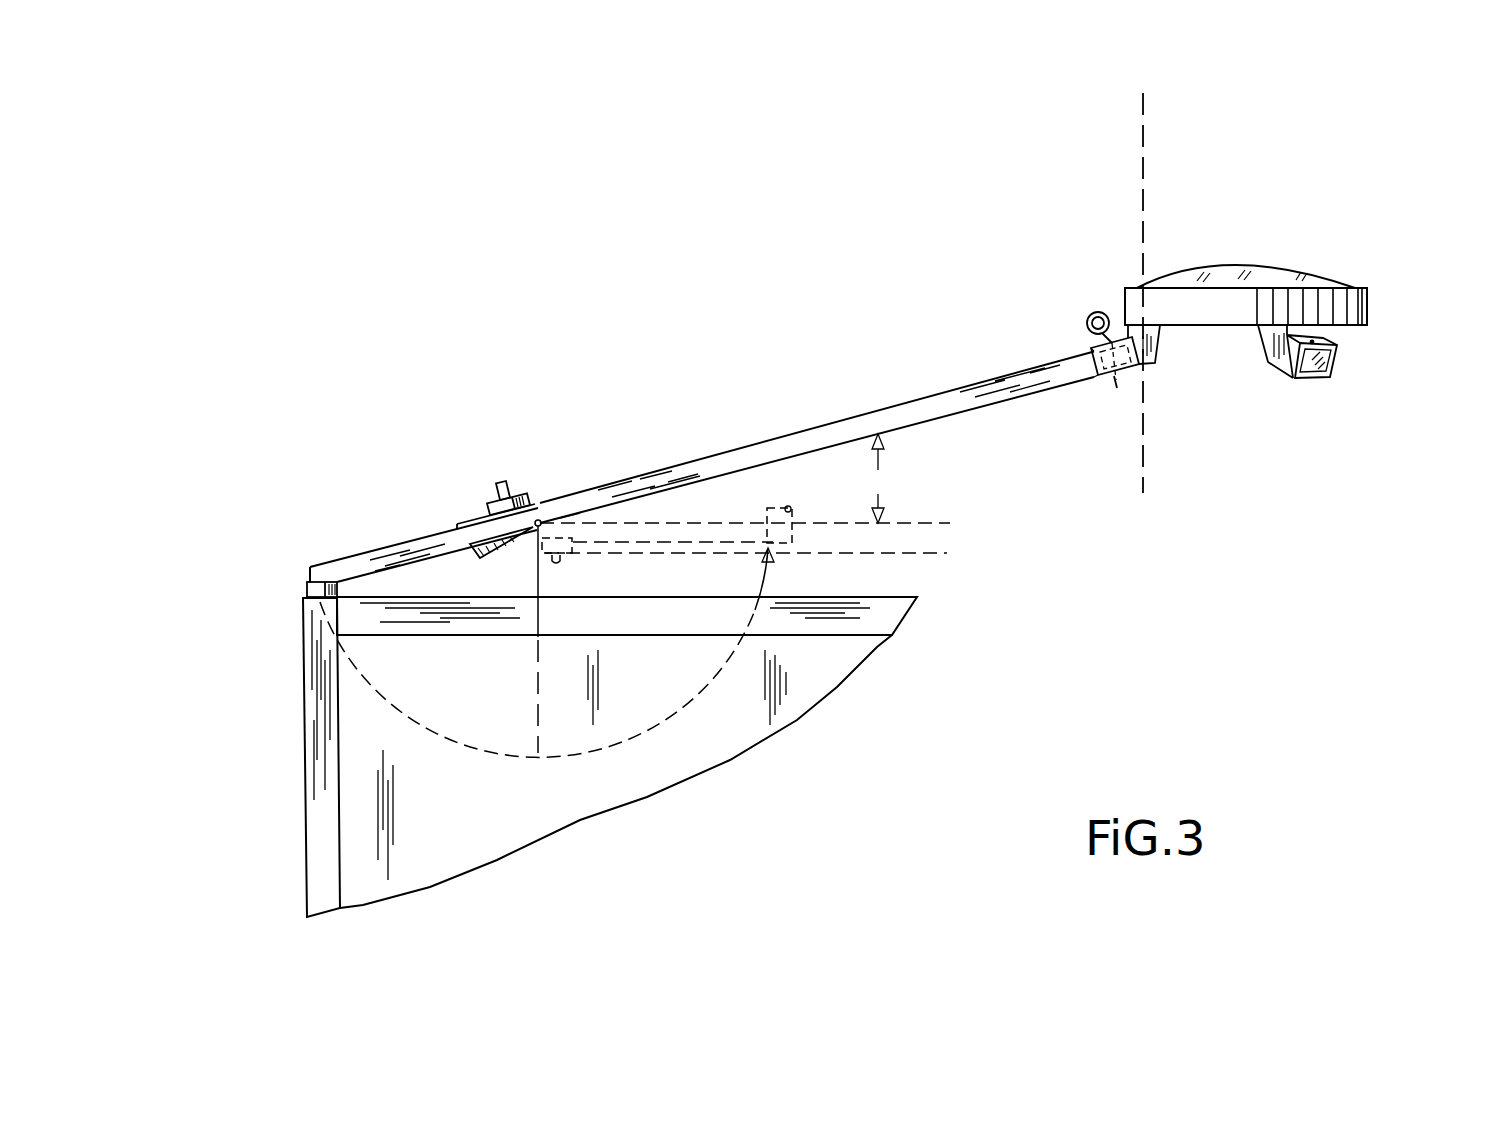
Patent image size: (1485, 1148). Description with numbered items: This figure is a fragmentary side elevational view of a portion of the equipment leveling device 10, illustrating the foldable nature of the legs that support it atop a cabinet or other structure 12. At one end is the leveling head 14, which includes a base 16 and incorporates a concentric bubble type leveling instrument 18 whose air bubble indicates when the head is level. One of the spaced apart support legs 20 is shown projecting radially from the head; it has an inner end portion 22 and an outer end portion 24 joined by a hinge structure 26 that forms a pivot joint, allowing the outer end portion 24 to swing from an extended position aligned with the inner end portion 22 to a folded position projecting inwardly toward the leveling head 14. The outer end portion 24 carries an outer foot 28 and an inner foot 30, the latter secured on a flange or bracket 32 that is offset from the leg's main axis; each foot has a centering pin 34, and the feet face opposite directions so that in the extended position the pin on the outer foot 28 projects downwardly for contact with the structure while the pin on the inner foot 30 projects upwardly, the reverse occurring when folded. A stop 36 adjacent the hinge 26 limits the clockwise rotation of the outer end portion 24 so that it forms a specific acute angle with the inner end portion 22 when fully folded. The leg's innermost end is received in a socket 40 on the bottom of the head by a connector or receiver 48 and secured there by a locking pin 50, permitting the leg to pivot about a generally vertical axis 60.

The leveling device 10 is at (913, 283).
The cabinet or other structure 12 is at (277, 835).
The leveling head 14 is at (1352, 250).
The base 16 is at (1368, 300).
The concentric bubble type leveling instrument 18 is at (1248, 278).
The support legs 20 is at (672, 427).
The inner end portion 22 is at (788, 438).
The outer end portion 24 is at (355, 552).
The hinge structure 26 is at (540, 519).
The outer foot 28 is at (307, 585).
The inner foot 30 is at (578, 567).
The flange or bracket 32 is at (467, 522).
The centering pin 34 is at (505, 485).
The stop 36 is at (575, 517).
The sockets 40 is at (1320, 400).
The connector or receiver 48 is at (1142, 365).
The locking pin 50 is at (1088, 316).
The vertical axis 60 is at (1142, 208).